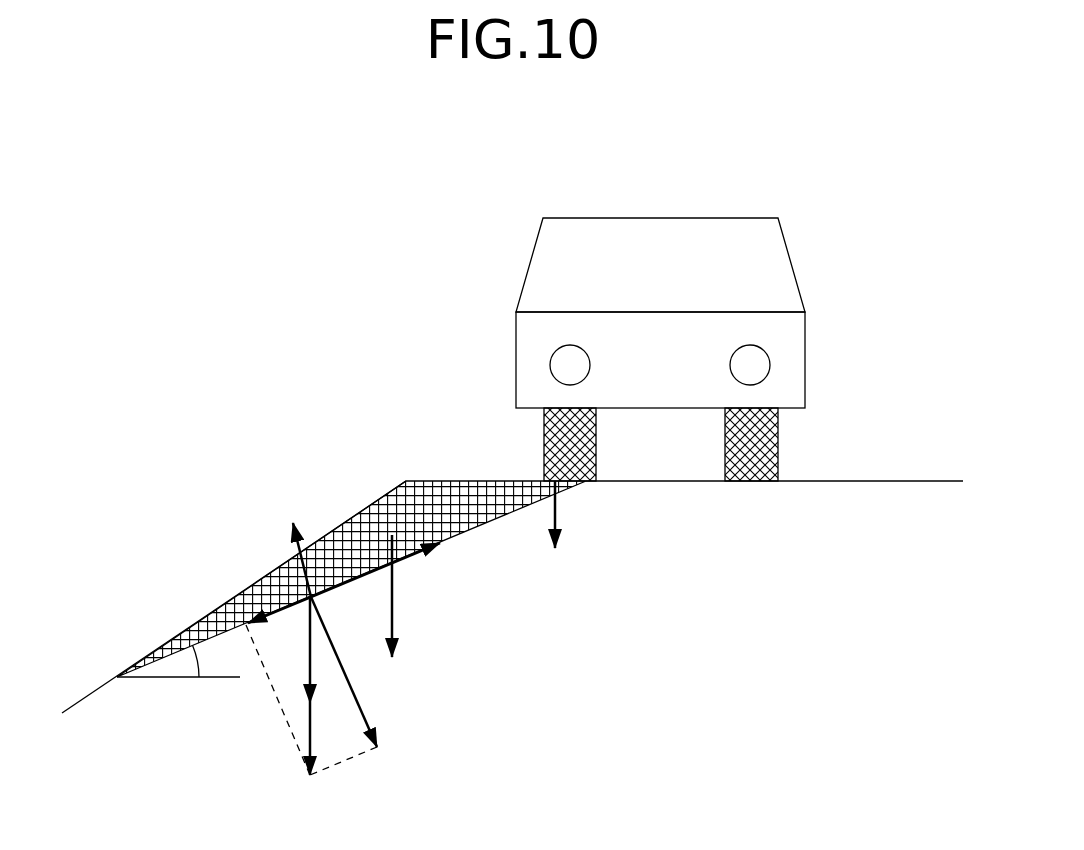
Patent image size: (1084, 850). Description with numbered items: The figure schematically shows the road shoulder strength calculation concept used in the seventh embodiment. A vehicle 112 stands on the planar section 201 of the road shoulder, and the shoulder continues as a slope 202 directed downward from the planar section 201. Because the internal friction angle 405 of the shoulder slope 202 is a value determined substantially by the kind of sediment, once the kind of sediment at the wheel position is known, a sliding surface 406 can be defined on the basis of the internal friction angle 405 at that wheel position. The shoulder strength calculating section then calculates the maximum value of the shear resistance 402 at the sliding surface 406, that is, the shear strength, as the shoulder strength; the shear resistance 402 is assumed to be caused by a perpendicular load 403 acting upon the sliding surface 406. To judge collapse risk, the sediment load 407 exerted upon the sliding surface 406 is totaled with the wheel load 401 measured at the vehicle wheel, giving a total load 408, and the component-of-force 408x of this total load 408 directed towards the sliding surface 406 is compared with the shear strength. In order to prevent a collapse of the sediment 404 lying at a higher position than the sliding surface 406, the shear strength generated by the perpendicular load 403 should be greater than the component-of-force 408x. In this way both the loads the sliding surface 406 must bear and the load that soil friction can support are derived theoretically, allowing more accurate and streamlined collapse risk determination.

The vehicle 112 is at (682, 213).
The planar section 201 is at (880, 480).
The slope 202 is at (83, 698).
The wheel load 401 is at (553, 532).
The shear resistance 402 is at (395, 570).
The perpendicular load 403 is at (289, 543).
The sediment 404 is at (388, 506).
The internal friction angle 405 is at (196, 652).
The sliding surface 406 is at (204, 636).
The sediment load 407 is at (390, 614).
The total load 408 is at (311, 707).
The component-of-force 408x is at (267, 650).